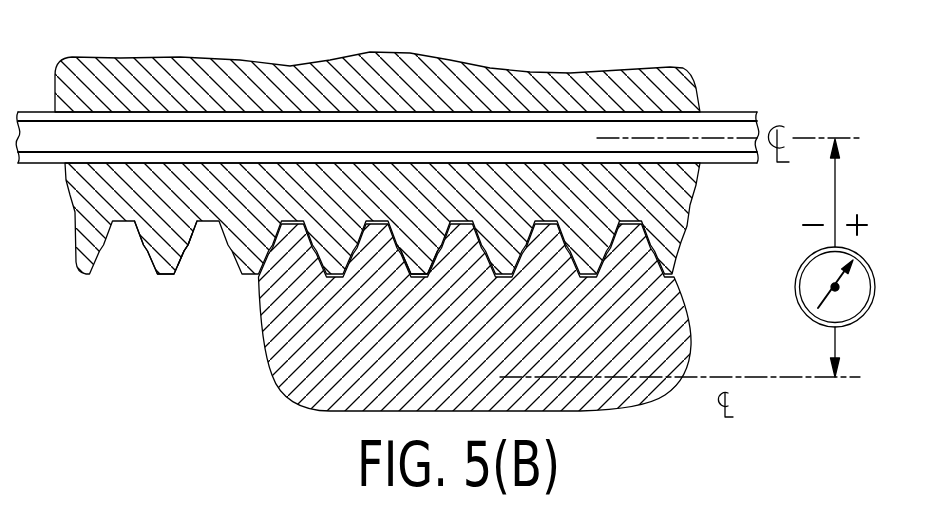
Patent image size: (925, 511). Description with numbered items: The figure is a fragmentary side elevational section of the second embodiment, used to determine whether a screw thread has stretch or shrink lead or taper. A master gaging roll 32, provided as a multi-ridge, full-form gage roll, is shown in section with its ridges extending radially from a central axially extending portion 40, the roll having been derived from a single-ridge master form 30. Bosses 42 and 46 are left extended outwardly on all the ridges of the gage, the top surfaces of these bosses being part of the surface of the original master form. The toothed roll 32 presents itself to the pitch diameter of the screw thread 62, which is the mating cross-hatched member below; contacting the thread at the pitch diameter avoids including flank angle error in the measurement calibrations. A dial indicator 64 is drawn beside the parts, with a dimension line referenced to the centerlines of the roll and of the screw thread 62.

The master form 30 is at (430, 270).
The master gaging roll 32 is at (592, 73).
The central axially extending portion 40 is at (715, 148).
The boss 42 is at (145, 246).
The boss 46 is at (187, 243).
The screw thread 62 is at (280, 345).
The dial indicator 64 is at (807, 282).